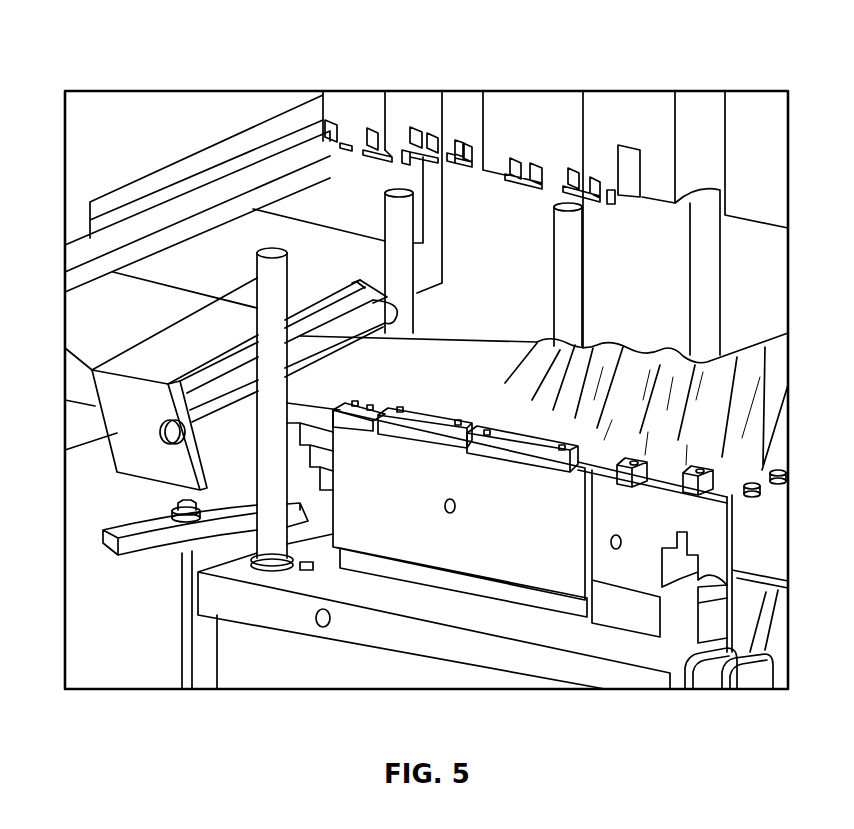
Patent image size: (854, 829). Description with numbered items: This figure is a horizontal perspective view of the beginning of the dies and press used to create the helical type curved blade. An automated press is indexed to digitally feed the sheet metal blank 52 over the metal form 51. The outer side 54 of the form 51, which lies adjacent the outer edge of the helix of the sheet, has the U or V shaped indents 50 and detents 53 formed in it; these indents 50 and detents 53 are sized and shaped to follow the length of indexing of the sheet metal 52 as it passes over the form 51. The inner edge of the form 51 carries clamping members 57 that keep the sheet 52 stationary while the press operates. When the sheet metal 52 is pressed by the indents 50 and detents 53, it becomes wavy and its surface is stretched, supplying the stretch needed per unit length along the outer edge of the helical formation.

The indents 50 is at (520, 162).
The metal form 51 is at (620, 105).
The sheet metal blank 52 is at (94, 322).
The detents 53 is at (415, 172).
The outer side of the form 54 is at (667, 342).
The clamping members 57 is at (513, 427).